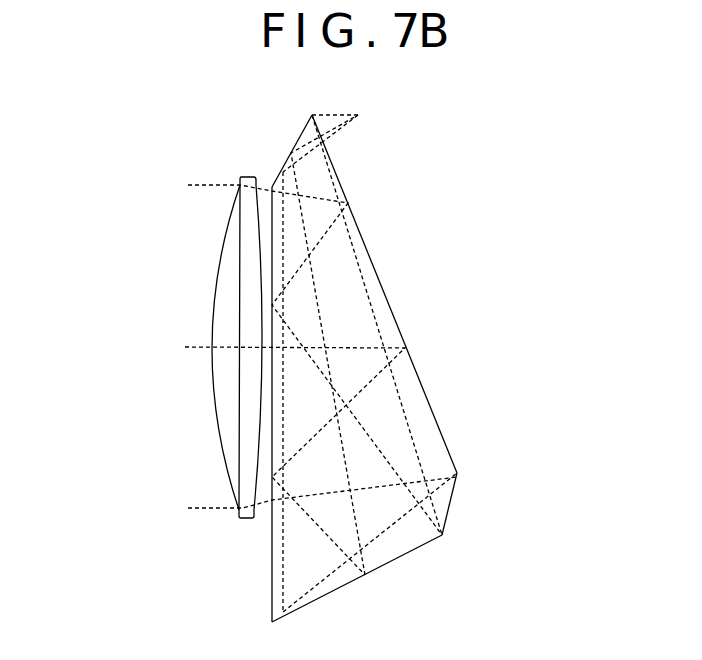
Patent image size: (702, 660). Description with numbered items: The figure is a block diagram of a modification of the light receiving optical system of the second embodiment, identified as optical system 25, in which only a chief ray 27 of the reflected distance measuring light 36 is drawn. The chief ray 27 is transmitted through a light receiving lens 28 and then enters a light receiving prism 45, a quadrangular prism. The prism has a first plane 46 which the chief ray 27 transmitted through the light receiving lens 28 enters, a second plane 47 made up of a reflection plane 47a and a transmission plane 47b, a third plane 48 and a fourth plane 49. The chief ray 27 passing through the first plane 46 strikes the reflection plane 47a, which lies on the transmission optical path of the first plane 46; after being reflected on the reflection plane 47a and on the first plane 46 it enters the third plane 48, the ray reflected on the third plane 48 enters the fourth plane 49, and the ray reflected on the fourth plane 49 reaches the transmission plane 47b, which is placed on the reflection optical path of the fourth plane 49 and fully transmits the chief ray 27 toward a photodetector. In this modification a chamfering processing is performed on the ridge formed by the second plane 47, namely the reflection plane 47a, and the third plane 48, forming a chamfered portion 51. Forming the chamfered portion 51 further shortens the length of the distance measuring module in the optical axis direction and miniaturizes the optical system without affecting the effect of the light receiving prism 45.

The optical unit 25 is at (72, 131).
The chief ray 27 is at (198, 345).
The light receiving lens 28 is at (223, 458).
The reflected distance measuring light 36 is at (205, 187).
The light receiving prism 45 is at (397, 258).
The first plane 46 is at (270, 563).
The second plane 47 is at (412, 360).
The reflection plane 47a is at (431, 406).
The transmission plane 47b is at (330, 155).
The third plane 48 is at (365, 575).
The fourth plane 49 is at (290, 148).
The chamfered portion 51 is at (453, 507).